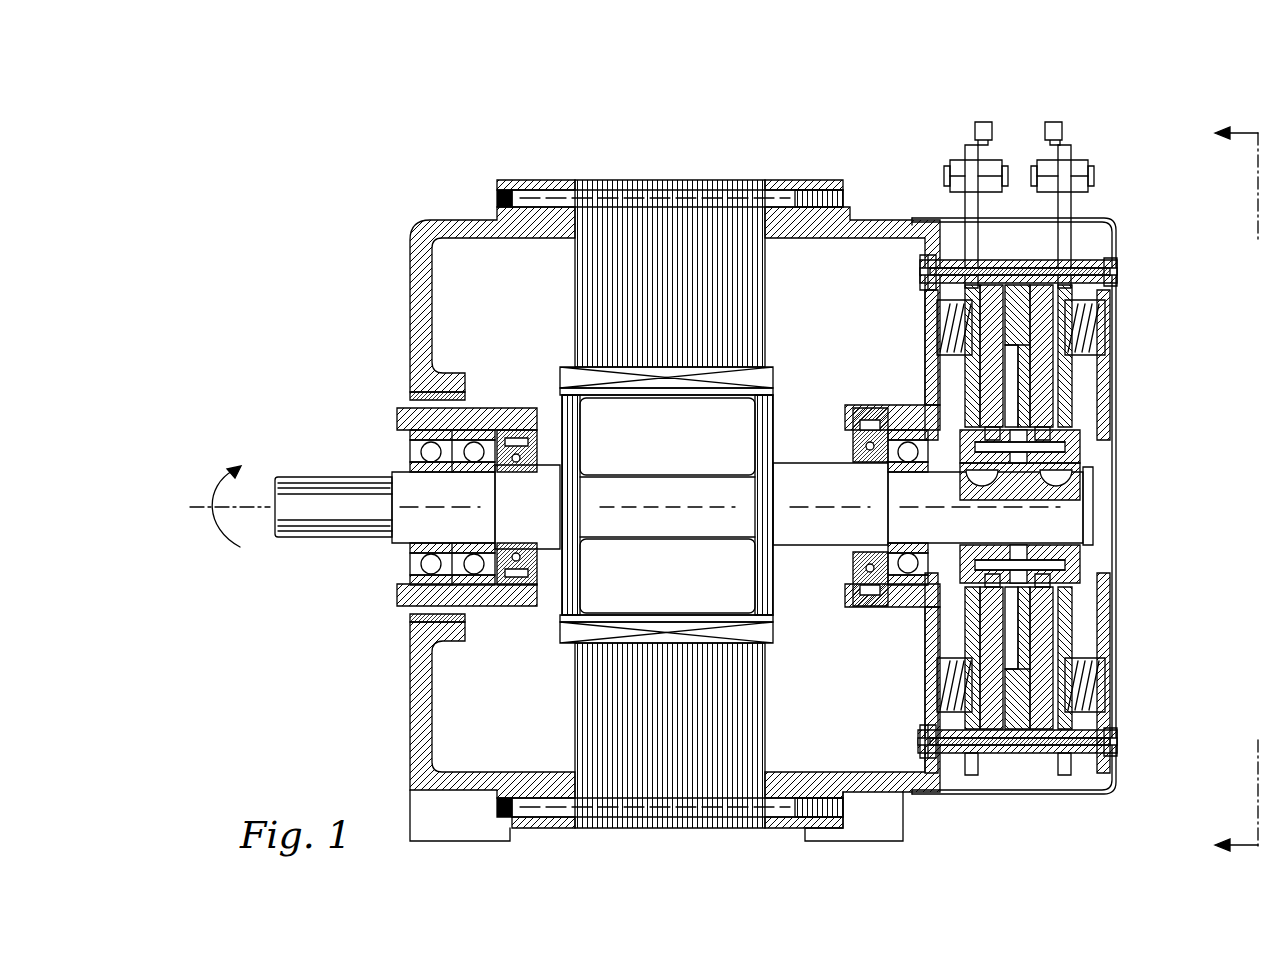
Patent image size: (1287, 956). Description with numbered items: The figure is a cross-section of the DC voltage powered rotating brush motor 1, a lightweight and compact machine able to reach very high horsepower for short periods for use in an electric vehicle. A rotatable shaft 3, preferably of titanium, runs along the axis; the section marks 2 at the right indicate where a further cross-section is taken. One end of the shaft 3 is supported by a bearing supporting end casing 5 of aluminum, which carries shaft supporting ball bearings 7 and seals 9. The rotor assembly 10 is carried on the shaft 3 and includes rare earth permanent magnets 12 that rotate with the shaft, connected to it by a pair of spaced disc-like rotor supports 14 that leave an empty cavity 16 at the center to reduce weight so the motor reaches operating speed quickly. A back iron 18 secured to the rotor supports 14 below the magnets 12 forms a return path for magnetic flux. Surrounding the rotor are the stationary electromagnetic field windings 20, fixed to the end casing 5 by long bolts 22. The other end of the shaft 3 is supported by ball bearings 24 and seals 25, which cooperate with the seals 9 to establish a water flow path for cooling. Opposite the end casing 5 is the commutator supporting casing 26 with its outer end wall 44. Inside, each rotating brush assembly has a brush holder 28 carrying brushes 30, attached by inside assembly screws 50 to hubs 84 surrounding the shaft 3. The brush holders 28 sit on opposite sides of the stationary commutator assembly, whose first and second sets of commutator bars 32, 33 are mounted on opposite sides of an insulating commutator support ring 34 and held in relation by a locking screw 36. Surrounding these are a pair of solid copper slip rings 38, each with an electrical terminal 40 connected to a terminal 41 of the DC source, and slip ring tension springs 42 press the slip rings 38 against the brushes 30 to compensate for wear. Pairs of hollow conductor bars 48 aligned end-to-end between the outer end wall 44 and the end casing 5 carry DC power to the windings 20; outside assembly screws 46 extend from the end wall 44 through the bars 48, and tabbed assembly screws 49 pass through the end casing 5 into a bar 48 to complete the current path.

The DC voltage powered rotating brush motor 1 is at (866, 142).
The section line 2 is at (1224, 489).
The rotatable shaft 3 is at (795, 465).
The bearing supporting end casing 5 is at (425, 276).
The shaft supporting ball bearings 7 is at (473, 442).
The seals 9 is at (522, 530).
The rotor assembly 10 is at (772, 596).
The rare earth permanent magnets 12 is at (770, 378).
The disc-like rotor supports 14 is at (760, 428).
The empty cavity 16 is at (745, 412).
The back iron 18 is at (568, 380).
The electromagnetic field windings 20 is at (660, 215).
The long bolts 22 is at (718, 198).
The ball bearings 24 is at (905, 462).
The seals 25 is at (870, 466).
The commutator supporting casing 26 is at (1015, 800).
The brush holder 28 is at (975, 778).
The brushes 30 is at (990, 368).
The first set of commutator bars 32 is at (1003, 340).
The second set of commutator bars 33 is at (1050, 420).
The insulating commutator support ring 34 is at (1065, 378).
The locking screw 36 is at (1088, 500).
The slip rings 38 is at (935, 292).
The electrical terminal 40 is at (940, 220).
The terminals of DC voltage source 41 is at (984, 120).
The slip ring tension springs 42 is at (950, 326).
The outer end wall 44 is at (1100, 345).
The outside assembly screws 46 is at (1106, 274).
The hollow conductor bars 48 is at (920, 262).
The tabbed assembly screws 49 is at (925, 275).
The inside assembly screws 50 is at (1082, 442).
The hubs 84 is at (1078, 466).